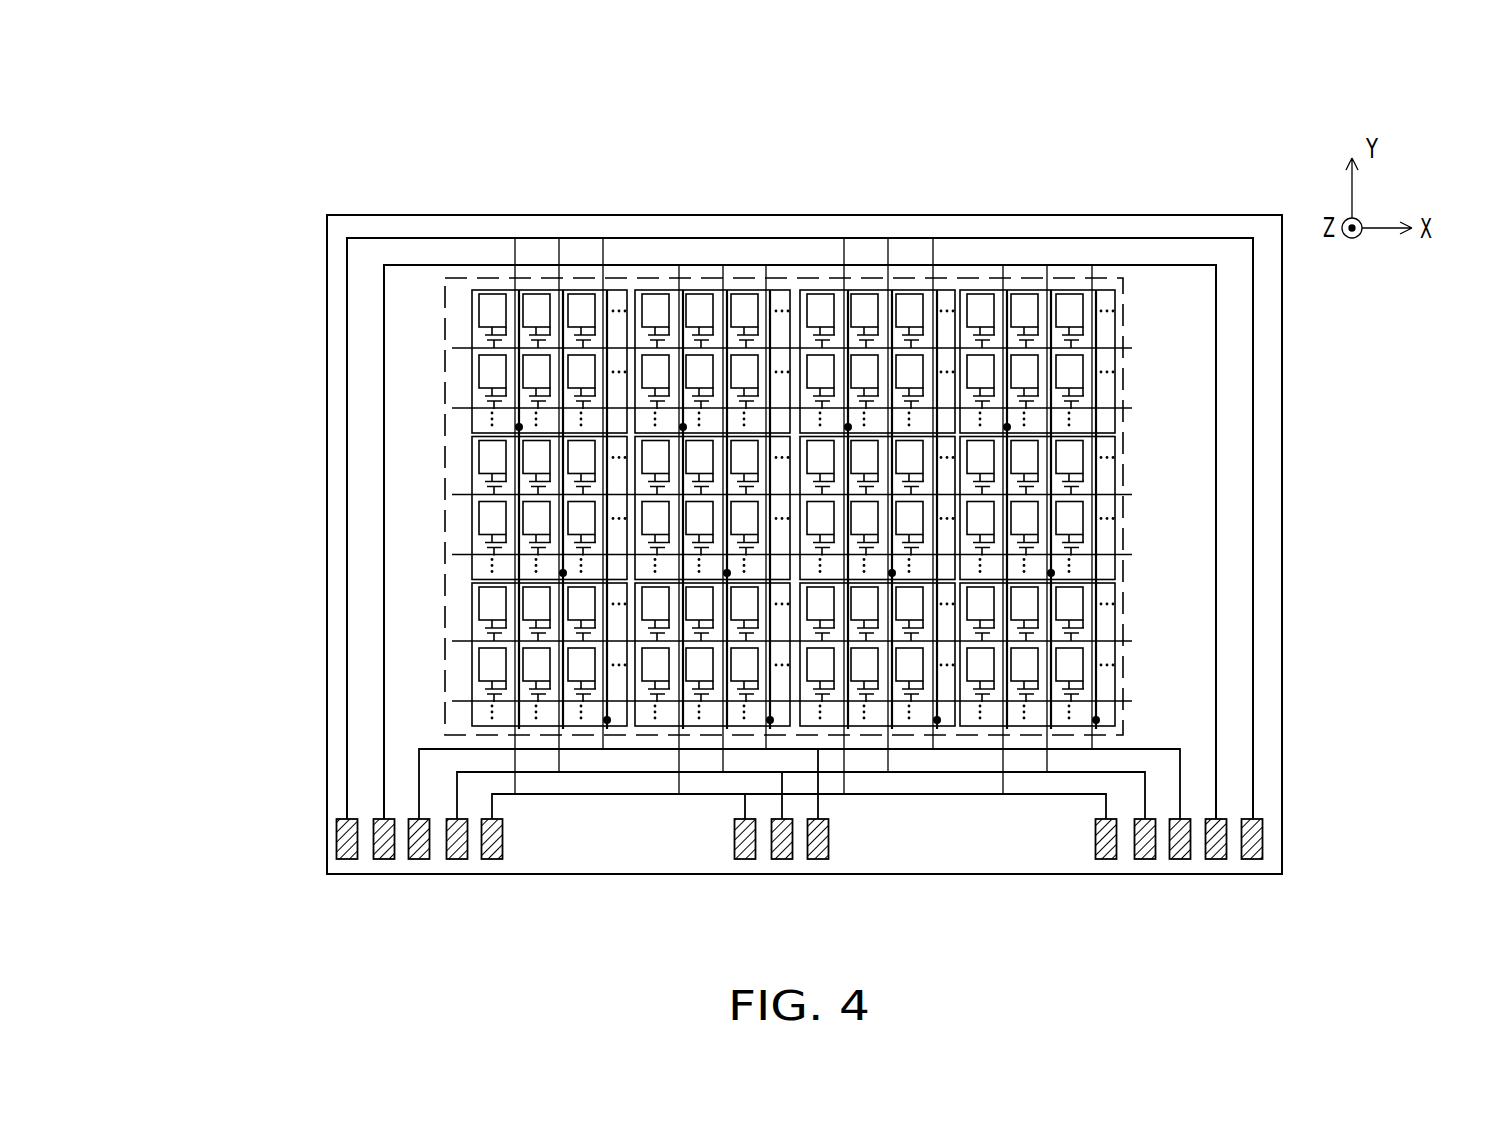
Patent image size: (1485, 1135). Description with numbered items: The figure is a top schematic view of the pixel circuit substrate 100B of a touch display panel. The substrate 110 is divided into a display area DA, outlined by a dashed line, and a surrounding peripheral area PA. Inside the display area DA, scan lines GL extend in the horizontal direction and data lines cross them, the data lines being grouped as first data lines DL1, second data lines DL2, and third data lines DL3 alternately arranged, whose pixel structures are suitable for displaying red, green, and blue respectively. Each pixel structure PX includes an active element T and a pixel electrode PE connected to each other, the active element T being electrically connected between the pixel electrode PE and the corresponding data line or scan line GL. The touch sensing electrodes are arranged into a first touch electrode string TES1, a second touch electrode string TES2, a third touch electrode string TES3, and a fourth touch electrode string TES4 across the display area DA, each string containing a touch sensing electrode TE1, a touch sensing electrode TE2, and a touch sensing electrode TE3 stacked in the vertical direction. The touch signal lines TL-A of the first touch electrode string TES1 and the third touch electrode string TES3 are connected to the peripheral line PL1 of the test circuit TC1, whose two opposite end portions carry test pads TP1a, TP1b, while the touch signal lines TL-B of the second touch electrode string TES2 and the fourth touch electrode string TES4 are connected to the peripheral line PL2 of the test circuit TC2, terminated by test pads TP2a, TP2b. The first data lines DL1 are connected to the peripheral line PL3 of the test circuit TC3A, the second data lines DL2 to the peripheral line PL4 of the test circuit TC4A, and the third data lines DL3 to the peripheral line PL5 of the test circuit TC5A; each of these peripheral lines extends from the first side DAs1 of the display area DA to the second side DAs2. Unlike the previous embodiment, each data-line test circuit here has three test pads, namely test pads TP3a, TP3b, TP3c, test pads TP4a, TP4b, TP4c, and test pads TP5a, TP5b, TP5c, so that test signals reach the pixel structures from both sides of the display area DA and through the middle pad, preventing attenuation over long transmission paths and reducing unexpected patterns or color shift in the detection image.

The substrate 110 is at (1283, 385).
The pixel circuit substrate 100B is at (1472, 966).
The peripheral area PA is at (1279, 311).
The display area DA is at (1140, 275).
The first side of the display area DAs1 is at (430, 324).
The second side of the display area DAs2 is at (1160, 313).
The peripheral line of test circuit TC1 PL1 is at (347, 517).
The peripheral line of test circuit TC2 PL2 is at (385, 549).
The peripheral line of test circuit TC3A PL3 is at (928, 794).
The peripheral line of test circuit TC4A PL4 is at (989, 772).
The peripheral line of test circuit TC5A PL5 is at (1043, 750).
The test pad TP1a is at (345, 859).
The test pad TP1b is at (1252, 859).
The test pad TP2a is at (384, 859).
The test pad TP2b is at (1216, 859).
The test pad TP3a is at (492, 859).
The test pad TP3b is at (1106, 859).
The test pad TP3c is at (745, 859).
The test pad TP4a is at (457, 859).
The test pad TP4b is at (1145, 859).
The test pad TP4c is at (782, 859).
The test pad TP5a is at (419, 859).
The test pad TP5b is at (1180, 859).
The test pad TP5c is at (818, 859).
The test circuit TC1 is at (162, 213).
The test circuit TC2 is at (162, 365).
The test circuit TC3A is at (162, 548).
The test circuit TC4A is at (162, 695).
The test circuit TC5A is at (162, 845).
The first touch electrode string TES1 is at (628, 140).
The second touch electrode string TES2 is at (790, 140).
The third touch electrode string TES3 is at (953, 140).
The fourth touch electrode string TES4 is at (1115, 140).
The touch signal lines TL-A is at (603, 273).
The touch signal lines TL-B is at (766, 273).
The first data line DL1 is at (515, 778).
The second data line DL2 is at (559, 758).
The third data line DL3 is at (603, 743).
The scan line GL is at (1132, 494).
The touch sensing electrode TE1 is at (472, 379).
The touch sensing electrode TE2 is at (472, 505).
The touch sensing electrode TE3 is at (472, 651).
The pixel electrode PE is at (1083, 605).
The active element T is at (1100, 637).
The pixel structure PX is at (1173, 585).